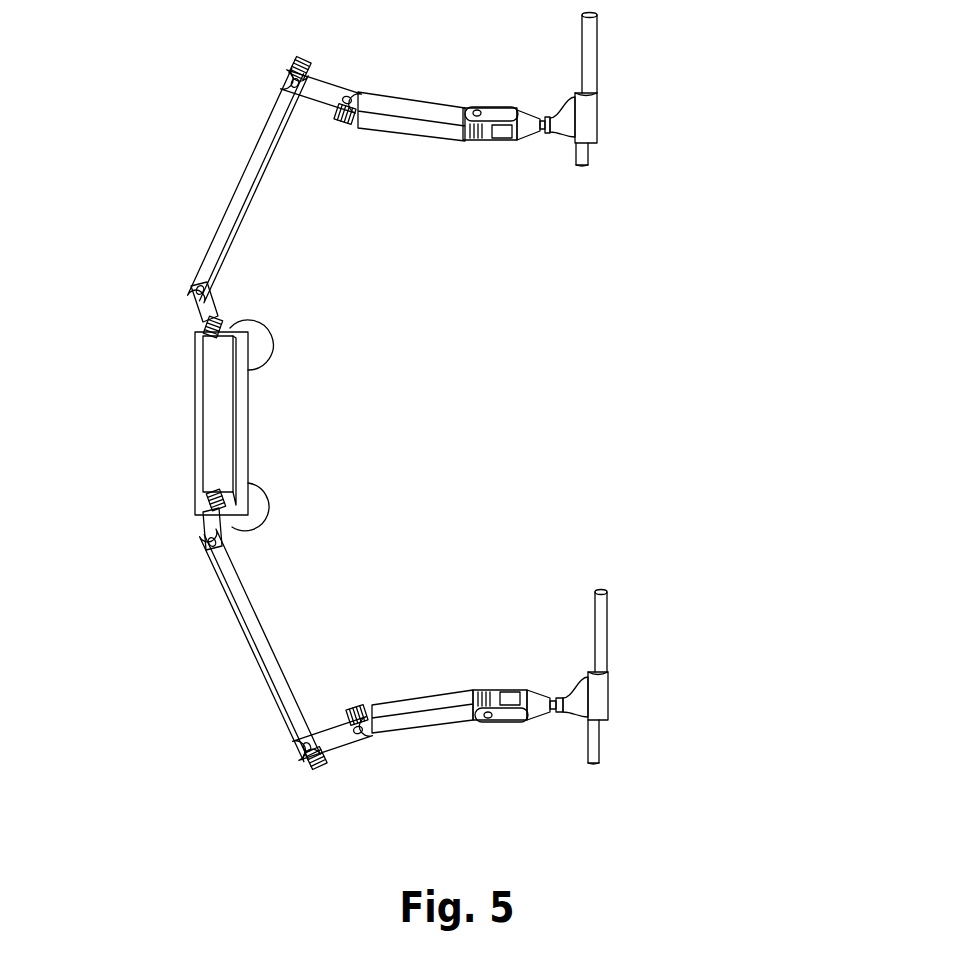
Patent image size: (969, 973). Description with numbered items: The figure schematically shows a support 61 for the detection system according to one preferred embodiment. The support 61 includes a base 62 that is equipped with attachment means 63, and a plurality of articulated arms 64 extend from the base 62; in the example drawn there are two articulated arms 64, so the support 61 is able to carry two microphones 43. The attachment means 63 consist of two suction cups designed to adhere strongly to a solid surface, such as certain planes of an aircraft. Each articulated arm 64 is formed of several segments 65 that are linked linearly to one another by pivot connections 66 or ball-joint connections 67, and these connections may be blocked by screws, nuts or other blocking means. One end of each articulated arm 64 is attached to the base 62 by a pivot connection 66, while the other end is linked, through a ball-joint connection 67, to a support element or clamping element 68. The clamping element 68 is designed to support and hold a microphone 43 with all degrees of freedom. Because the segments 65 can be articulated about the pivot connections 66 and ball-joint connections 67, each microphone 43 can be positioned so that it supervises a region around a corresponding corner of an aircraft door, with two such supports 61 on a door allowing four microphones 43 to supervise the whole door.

The microphone 43 is at (588, 62).
The support 61 is at (180, 456).
The base 62 is at (212, 371).
The attachment means 63 is at (257, 348).
The articulated arm 64 is at (245, 98).
The segment 65 is at (243, 200).
The pivot connection 66 is at (357, 93).
The ball-joint connection 67 is at (528, 132).
The clamping element 68 is at (590, 124).